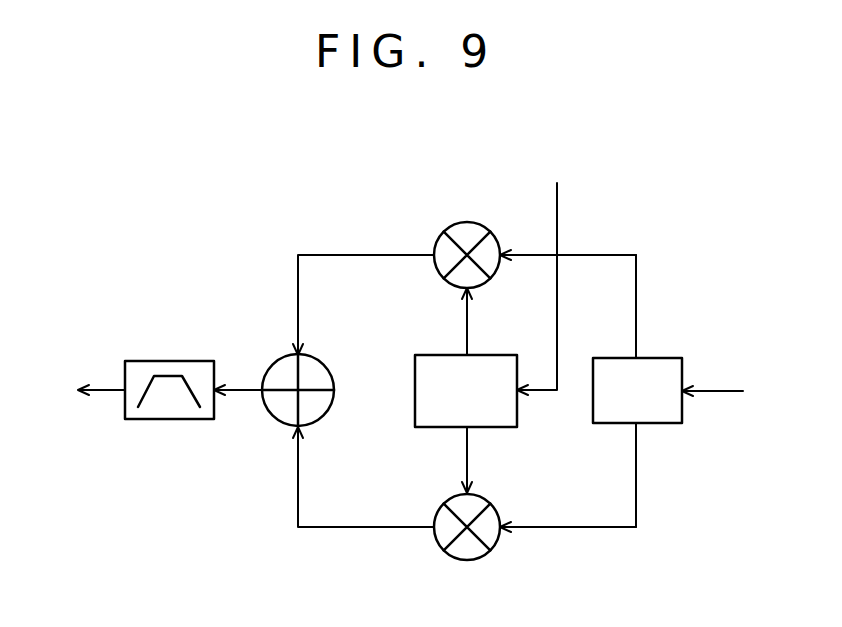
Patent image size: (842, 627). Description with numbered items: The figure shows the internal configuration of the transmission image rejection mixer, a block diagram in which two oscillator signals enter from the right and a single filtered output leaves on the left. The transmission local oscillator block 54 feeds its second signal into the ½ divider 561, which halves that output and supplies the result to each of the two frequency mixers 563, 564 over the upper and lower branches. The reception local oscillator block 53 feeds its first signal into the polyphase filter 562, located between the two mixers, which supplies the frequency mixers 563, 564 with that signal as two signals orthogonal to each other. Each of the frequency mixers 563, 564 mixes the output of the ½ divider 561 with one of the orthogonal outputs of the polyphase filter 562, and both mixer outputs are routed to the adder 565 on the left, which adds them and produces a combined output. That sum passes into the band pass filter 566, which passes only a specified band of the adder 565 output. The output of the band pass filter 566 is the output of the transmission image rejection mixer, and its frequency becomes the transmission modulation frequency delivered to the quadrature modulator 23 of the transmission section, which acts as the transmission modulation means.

The quadrature modulator 23 is at (82, 392).
The reception local oscillator block 53 is at (547, 272).
The transmission local oscillator block 54 is at (732, 393).
The ½ divider 561 is at (685, 412).
The polyphase filter 562 is at (433, 355).
The frequency mixer 563 is at (438, 240).
The frequency mixer 564 is at (497, 549).
The adder 565 is at (268, 418).
The band pass filter 566 is at (167, 361).